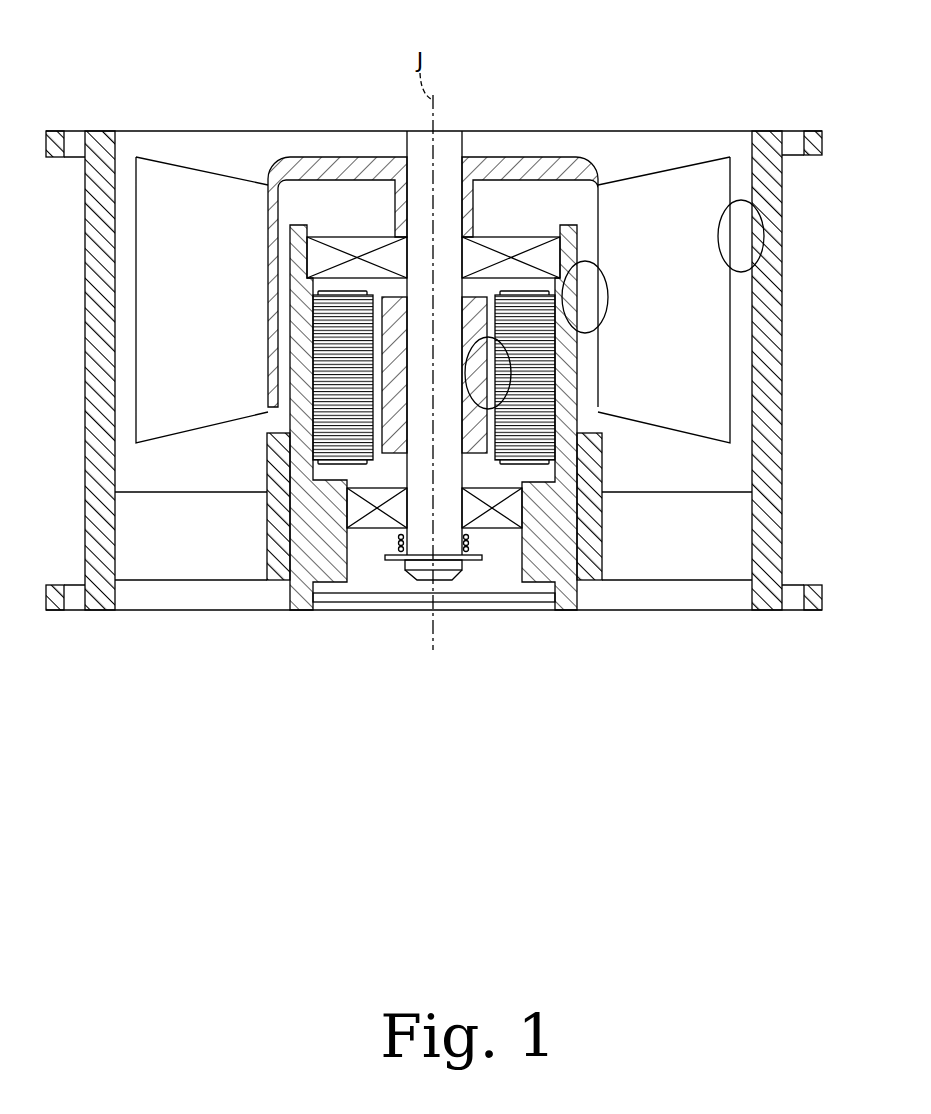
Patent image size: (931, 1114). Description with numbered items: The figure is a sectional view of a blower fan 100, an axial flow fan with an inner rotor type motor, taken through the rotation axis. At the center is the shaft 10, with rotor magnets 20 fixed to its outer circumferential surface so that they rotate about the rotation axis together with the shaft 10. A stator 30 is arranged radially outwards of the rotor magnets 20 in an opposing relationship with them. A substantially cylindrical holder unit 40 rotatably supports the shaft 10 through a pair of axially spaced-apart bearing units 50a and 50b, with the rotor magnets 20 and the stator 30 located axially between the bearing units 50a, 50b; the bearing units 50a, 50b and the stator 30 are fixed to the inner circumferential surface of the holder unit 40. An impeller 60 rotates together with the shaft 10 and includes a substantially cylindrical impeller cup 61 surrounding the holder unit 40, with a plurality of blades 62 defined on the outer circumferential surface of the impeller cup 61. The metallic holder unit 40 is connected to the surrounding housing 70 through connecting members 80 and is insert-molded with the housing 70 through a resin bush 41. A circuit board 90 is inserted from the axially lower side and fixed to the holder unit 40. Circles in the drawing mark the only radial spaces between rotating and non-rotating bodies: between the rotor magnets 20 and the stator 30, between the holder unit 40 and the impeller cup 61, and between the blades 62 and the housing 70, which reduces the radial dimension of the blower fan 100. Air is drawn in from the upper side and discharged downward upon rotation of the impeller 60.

The blower fan 100 is at (776, 46).
The shaft 10 is at (453, 140).
The rotor magnets 20 is at (472, 435).
The stator 30 is at (535, 387).
The holder unit 40 is at (565, 341).
The resin bush 41 is at (592, 537).
The upper bearing unit 50a is at (355, 237).
The lower bearing unit 50b is at (371, 518).
The impeller 60 is at (565, 51).
The impeller cup 61 is at (566, 165).
The blades 62 is at (646, 205).
The housing 70 is at (767, 300).
The connecting members 80 is at (187, 550).
The circuit board 90 is at (385, 598).